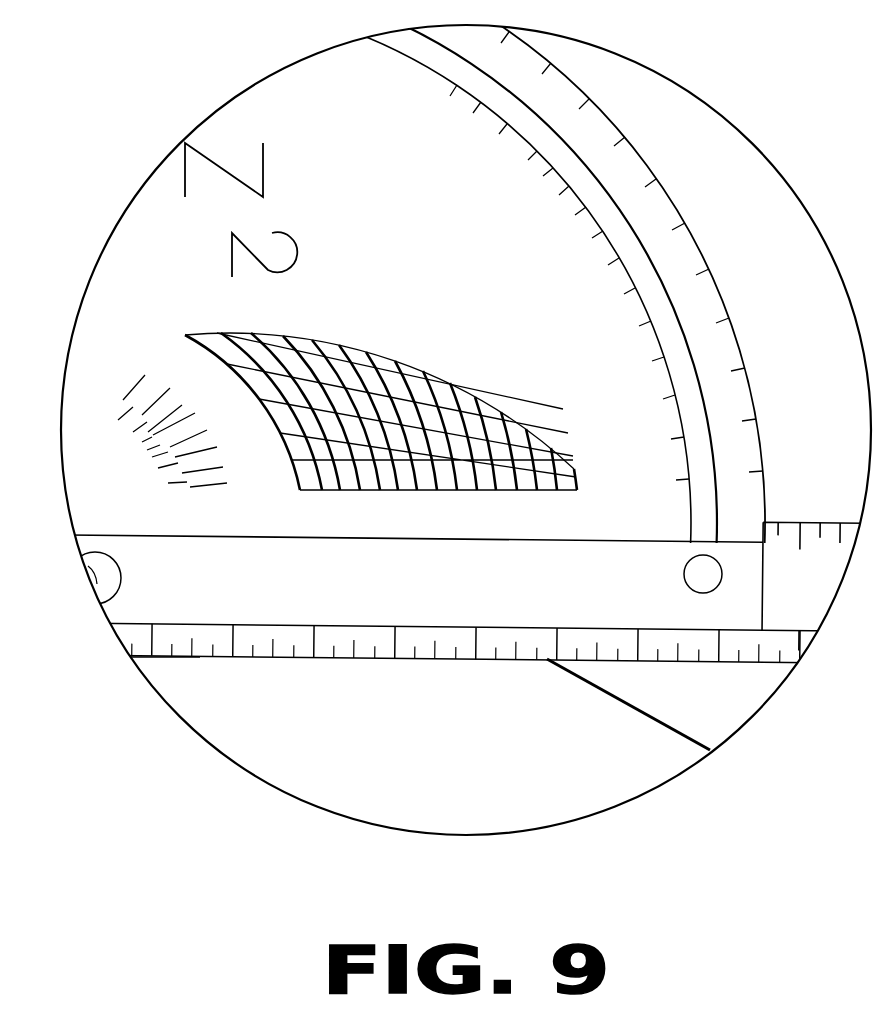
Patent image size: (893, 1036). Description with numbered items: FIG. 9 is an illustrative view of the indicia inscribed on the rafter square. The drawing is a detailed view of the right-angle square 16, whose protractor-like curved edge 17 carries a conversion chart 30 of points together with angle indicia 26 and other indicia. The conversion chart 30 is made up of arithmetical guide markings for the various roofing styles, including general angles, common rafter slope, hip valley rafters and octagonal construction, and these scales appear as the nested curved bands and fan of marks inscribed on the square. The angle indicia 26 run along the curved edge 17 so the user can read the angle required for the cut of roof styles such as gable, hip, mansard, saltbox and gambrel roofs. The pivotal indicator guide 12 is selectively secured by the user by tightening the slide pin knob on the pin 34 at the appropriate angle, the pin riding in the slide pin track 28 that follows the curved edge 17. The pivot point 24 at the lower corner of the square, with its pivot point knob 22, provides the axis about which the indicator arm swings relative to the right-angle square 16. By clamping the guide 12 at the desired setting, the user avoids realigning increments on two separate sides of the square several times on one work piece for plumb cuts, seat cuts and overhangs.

The pivotal indicator guide 12 is at (720, 620).
The right-angle square 16 is at (207, 640).
The protractor-like curved edge 17 is at (697, 240).
The pivot point knob 22 is at (137, 662).
The pivot point 24 is at (101, 610).
The angle indicia 26 is at (640, 177).
The slide pin track 28 is at (700, 300).
The conversion table 30 is at (203, 330).
The pivot point pin 34 is at (703, 556).